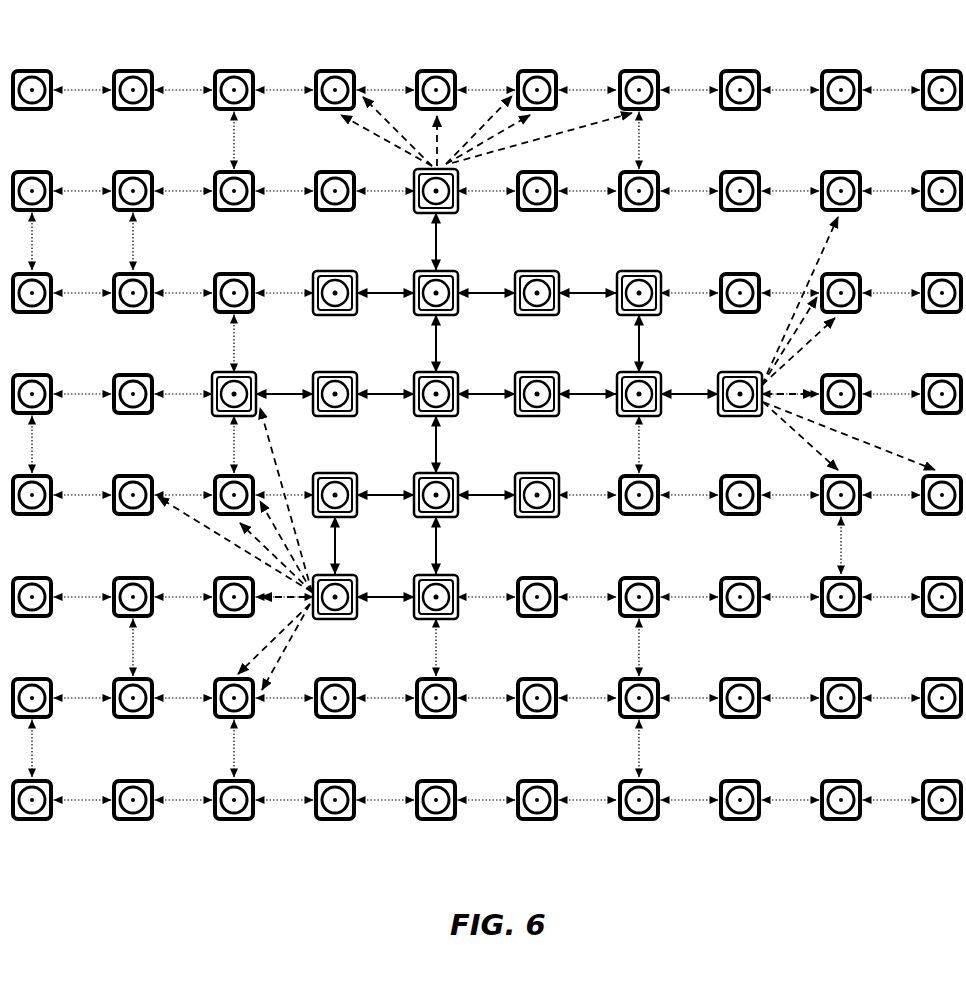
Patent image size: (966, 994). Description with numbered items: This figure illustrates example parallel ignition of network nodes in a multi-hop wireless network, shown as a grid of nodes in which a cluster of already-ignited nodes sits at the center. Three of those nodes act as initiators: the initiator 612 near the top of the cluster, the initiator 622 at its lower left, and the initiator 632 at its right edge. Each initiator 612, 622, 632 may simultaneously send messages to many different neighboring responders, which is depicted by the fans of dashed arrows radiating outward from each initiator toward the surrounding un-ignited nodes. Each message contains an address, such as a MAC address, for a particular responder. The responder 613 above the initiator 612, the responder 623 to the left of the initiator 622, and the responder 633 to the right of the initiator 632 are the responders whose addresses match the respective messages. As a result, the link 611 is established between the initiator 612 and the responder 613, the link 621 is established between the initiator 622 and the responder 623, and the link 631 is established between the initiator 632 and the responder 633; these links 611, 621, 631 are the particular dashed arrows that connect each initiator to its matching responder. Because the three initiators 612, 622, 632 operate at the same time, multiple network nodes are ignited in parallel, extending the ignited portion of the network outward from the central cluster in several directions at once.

The link 611 is at (435, 128).
The initiator 612 is at (413, 205).
The responder 613 is at (444, 78).
The link 621 is at (280, 599).
The initiator 622 is at (340, 614).
The responder 623 is at (232, 593).
The link 631 is at (798, 390).
The initiator 632 is at (733, 408).
The responder 633 is at (850, 397).